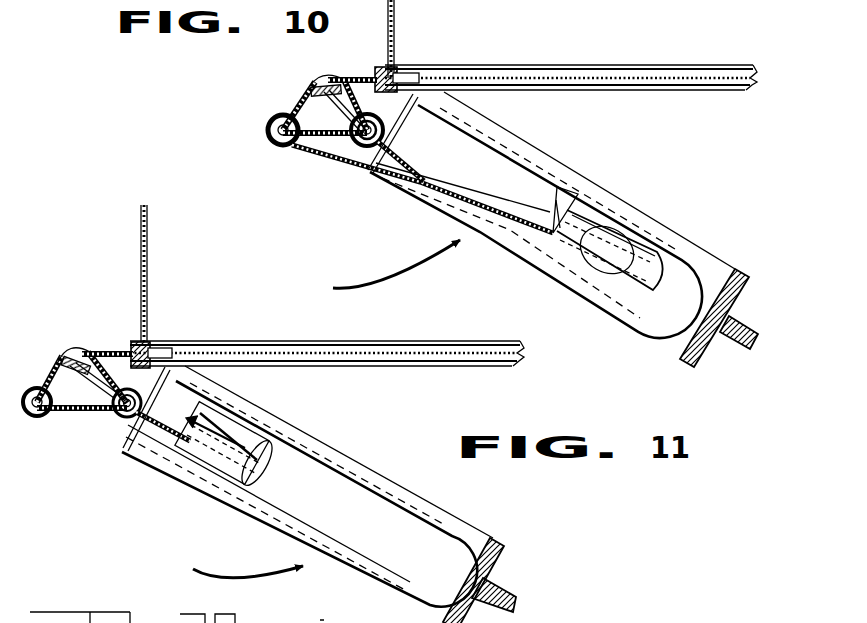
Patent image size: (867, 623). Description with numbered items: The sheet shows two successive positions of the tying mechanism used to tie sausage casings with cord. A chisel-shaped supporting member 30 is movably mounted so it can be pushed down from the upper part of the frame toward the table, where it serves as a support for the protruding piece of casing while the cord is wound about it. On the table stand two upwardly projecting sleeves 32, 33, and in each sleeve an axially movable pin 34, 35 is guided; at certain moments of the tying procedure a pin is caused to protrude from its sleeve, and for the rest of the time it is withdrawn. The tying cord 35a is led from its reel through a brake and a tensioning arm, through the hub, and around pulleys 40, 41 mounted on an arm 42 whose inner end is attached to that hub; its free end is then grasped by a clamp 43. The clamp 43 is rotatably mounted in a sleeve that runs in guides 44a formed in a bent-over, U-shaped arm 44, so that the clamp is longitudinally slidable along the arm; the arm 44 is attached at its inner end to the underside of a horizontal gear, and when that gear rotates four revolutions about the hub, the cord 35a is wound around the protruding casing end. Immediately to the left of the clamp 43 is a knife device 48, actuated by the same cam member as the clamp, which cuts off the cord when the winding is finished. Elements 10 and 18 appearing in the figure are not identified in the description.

In FIG. 10, the frame link 10 is at (292, 98).
In FIG. 11, the frame link 10 is at (60, 358).
In FIG. 10, the cable anchor 18 is at (577, 196).
In FIG. 10, the supporting member 30 is at (325, 78).
In FIG. 11, the supporting member 30 is at (90, 332).
In FIG. 10, the sleeve 32 is at (312, 140).
In FIG. 11, the sleeve 32 is at (33, 418).
In FIG. 10, the sleeve 33 is at (387, 135).
In FIG. 11, the sleeve 33 is at (128, 418).
In FIG. 10, the pin 34 is at (277, 142).
In FIG. 11, the pin 34 is at (48, 418).
In FIG. 10, the pin 35 is at (364, 165).
In FIG. 10, the tying cord 35a is at (397, 15).
In FIG. 11, the tying cord 35a is at (148, 263).
In FIG. 10, the pulley 40 is at (408, 77).
In FIG. 11, the pulley 40 is at (173, 346).
In FIG. 10, the pulley 41 is at (755, 90).
In FIG. 11, the pulley 41 is at (521, 366).
In FIG. 10, the arm 42 is at (620, 70).
In FIG. 11, the arm 42 is at (368, 368).
In FIG. 10, the clamp 43 is at (630, 240).
In FIG. 11, the clamp 43 is at (268, 431).
In FIG. 10, the bent-over arm 44 is at (694, 252).
In FIG. 11, the bent-over arm 44 is at (480, 535).
In FIG. 10, the guides 44a is at (545, 268).
In FIG. 11, the guides 44a is at (375, 477).
In FIG. 11, the knife device 48 is at (147, 457).